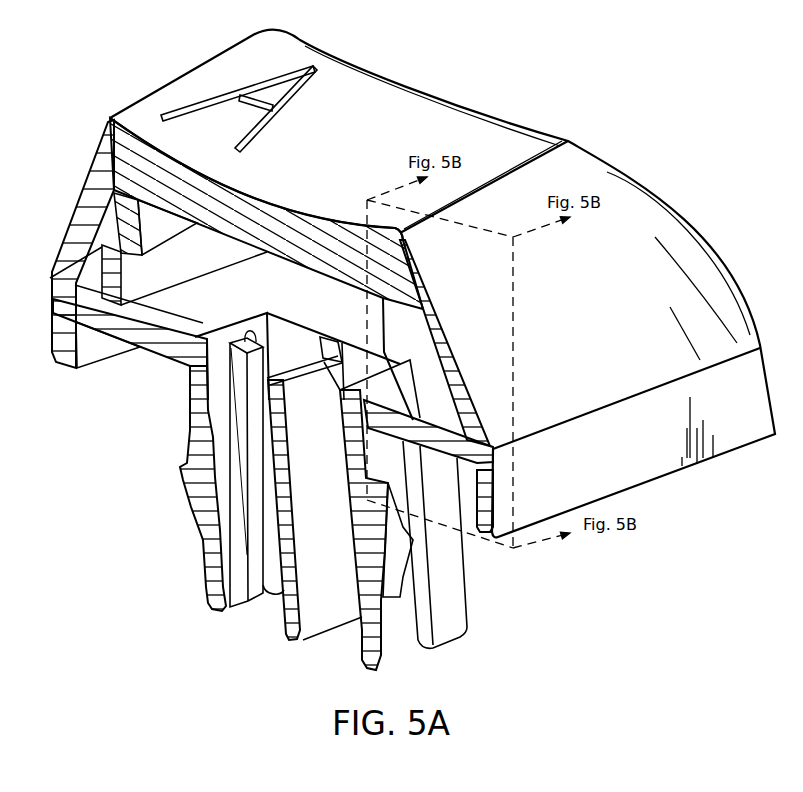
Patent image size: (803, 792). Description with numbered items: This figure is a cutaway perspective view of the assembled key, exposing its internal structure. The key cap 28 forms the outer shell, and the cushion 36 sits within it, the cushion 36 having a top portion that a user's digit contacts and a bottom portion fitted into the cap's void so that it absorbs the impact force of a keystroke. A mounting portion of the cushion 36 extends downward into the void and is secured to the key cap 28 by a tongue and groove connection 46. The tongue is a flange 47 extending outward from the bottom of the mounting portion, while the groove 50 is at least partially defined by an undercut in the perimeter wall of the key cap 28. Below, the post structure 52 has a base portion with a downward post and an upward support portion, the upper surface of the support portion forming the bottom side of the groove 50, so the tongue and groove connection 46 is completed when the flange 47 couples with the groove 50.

The key cap 28 is at (680, 212).
The cushion 36 is at (137, 103).
The tongue and groove connection 46 is at (458, 308).
The flange 47 is at (455, 360).
The groove 50 is at (470, 368).
The post structure 52 is at (65, 372).